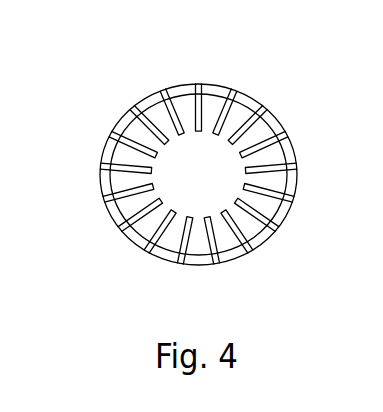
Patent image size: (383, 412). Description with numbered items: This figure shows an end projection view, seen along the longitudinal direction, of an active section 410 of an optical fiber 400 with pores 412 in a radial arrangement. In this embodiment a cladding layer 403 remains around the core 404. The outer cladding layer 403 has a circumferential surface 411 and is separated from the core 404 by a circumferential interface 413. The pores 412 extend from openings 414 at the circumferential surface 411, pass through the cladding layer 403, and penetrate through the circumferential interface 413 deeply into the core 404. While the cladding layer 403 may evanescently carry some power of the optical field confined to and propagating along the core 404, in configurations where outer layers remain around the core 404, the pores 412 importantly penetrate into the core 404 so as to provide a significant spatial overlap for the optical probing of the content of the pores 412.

The optical fiber 400 is at (199, 174).
The cladding layer 403 is at (232, 250).
The core 404 is at (203, 180).
The active section 410 is at (257, 179).
The circumferential surface 411 is at (241, 95).
The pores 412 is at (101, 162).
The circumferential interface 413 is at (243, 122).
The openings 414 is at (161, 95).